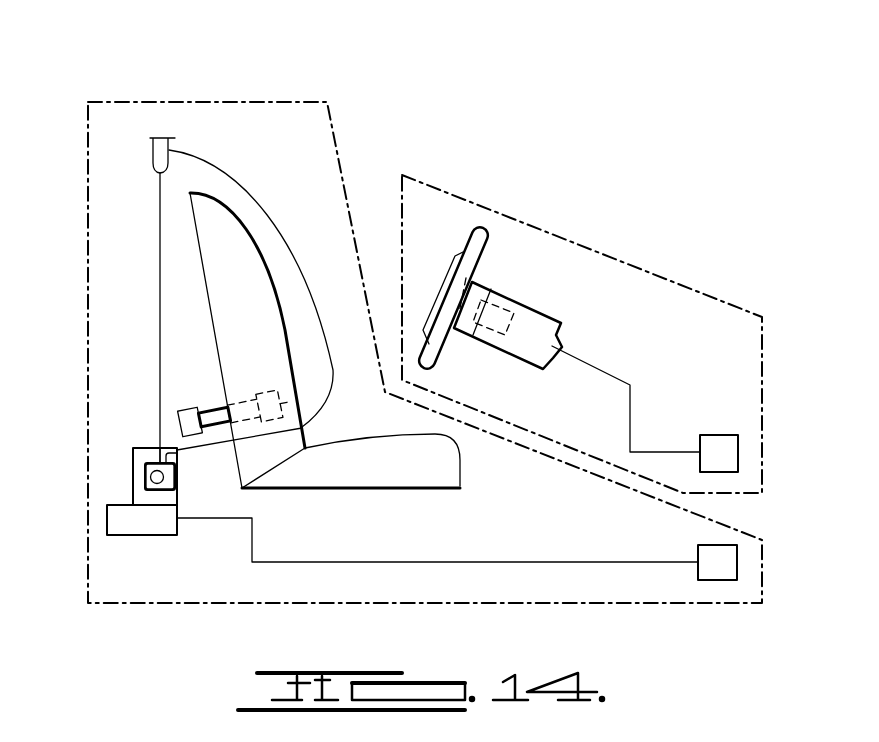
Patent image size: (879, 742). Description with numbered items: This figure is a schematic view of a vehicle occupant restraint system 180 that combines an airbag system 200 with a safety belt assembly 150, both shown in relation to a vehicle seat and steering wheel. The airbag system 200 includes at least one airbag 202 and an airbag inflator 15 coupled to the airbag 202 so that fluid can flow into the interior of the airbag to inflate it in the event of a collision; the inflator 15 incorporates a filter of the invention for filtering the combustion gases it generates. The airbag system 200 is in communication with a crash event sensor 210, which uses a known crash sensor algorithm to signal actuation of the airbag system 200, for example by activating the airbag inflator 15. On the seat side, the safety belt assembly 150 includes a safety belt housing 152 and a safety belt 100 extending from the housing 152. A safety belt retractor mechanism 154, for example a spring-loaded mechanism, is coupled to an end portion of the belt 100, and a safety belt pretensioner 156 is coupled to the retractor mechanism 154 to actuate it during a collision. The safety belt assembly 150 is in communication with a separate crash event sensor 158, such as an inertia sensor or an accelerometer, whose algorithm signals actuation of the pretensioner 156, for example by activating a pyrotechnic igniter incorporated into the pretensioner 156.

The safety belt assembly 150 is at (297, 101).
The safety belt 100 is at (262, 197).
The safety belt housing 152 is at (145, 477).
The safety belt retractor mechanism 154 is at (133, 448).
The safety belt pretensioner 156 is at (145, 535).
The crash event sensor 158 is at (705, 552).
The vehicle occupant restraint system 180 is at (553, 137).
The airbag system 200 is at (608, 256).
The airbag 202 is at (485, 273).
The airbag inflator 15 is at (510, 316).
The crash event sensor 210 is at (718, 442).